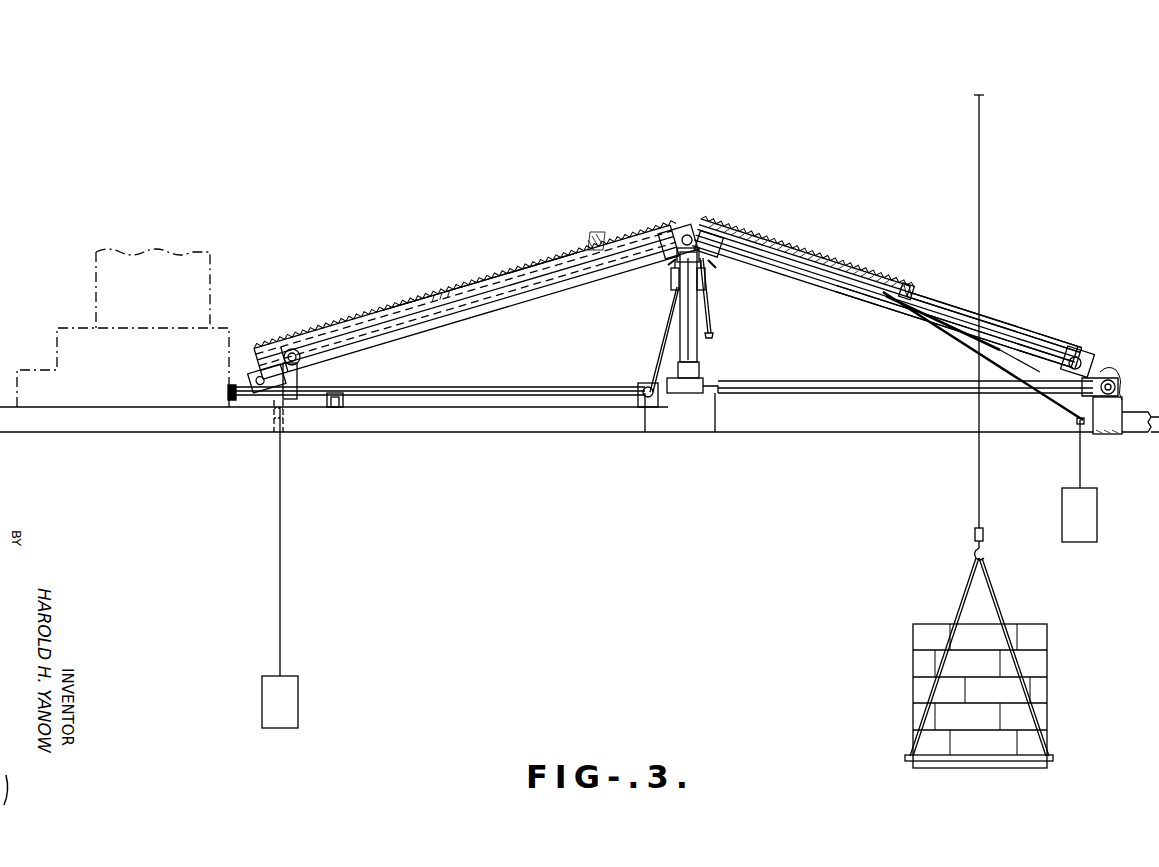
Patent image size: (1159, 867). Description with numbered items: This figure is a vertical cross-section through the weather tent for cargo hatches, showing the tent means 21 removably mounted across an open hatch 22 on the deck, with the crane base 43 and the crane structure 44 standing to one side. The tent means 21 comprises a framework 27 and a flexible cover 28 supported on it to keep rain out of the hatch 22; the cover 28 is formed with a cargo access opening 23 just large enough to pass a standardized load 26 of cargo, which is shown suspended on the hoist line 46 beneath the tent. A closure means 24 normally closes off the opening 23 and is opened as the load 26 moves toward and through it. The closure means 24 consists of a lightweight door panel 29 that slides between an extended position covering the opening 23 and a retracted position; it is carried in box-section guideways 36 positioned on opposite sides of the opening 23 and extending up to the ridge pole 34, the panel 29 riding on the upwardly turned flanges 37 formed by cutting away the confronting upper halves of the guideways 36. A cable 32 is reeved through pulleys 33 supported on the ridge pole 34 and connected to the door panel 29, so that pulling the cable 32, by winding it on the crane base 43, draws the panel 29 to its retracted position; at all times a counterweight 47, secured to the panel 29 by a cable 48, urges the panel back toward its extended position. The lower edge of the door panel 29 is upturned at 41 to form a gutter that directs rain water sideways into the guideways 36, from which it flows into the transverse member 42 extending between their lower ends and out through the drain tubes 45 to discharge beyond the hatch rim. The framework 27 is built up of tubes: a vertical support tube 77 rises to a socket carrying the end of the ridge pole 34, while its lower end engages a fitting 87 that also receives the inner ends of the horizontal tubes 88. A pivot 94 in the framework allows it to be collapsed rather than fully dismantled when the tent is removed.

The tent means 21 is at (538, 246).
The open hatch 22 is at (904, 428).
The cargo access openings 23 is at (998, 320).
The closure means 24 is at (788, 264).
The load 26 is at (1050, 672).
The framework 27 is at (584, 380).
The flexible cover 28 is at (497, 270).
The door panels 29 is at (478, 282).
The cables 32 is at (664, 323).
The pulleys 33 is at (667, 263).
The ridge pole 34 is at (690, 228).
The guideways 36 is at (598, 238).
The upwardly turned flanges 37 is at (853, 302).
The upturned lower edge 41 is at (900, 294).
The transverse member 42 is at (1083, 356).
The crane base 43 is at (228, 355).
The superstructure 44 is at (212, 287).
The drain tubes 45 is at (292, 346).
The hoist rope 46 is at (982, 202).
The counterweight 47 is at (299, 708).
The cable 48 is at (283, 572).
The vertical support tube 77 is at (692, 355).
The fitting 87 is at (679, 393).
The horizontal tubes 88 is at (502, 386).
The pivot 94 is at (258, 398).